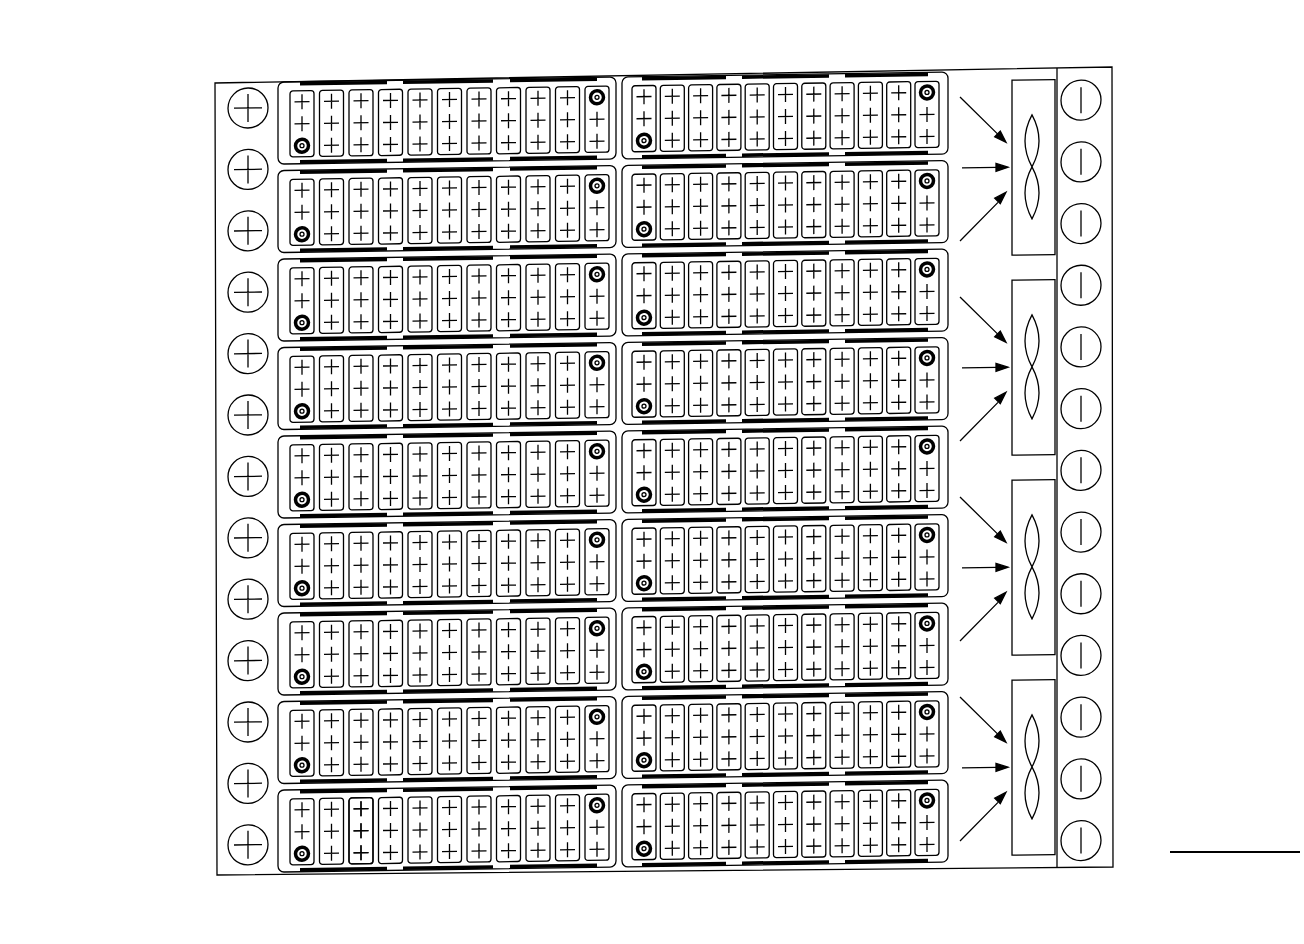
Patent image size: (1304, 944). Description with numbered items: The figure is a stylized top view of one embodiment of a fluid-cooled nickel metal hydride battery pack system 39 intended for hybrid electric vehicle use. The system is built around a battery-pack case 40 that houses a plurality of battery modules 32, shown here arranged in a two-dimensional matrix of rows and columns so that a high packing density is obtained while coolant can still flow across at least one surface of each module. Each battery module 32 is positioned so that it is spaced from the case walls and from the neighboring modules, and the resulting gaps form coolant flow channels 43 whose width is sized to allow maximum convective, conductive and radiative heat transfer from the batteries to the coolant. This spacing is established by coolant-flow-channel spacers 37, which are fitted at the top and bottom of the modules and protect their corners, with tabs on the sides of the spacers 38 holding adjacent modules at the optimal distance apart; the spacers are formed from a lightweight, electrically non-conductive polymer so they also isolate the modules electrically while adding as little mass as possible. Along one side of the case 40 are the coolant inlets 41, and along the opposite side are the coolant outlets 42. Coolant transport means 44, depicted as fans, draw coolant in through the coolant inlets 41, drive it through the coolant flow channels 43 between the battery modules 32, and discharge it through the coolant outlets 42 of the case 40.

The battery module 32 is at (355, 843).
The coolant-flow-channel spacer 37 is at (628, 82).
The tabs on the sides of the spacers 38 is at (505, 872).
The fluid-cooled battery pack system 39 is at (152, 220).
The battery-pack case 40 is at (245, 83).
The coolant inlet 41 is at (238, 302).
The coolant outlet 42 is at (1095, 287).
The coolant flow channel 43 is at (335, 437).
The coolant transport means 44 is at (1050, 140).